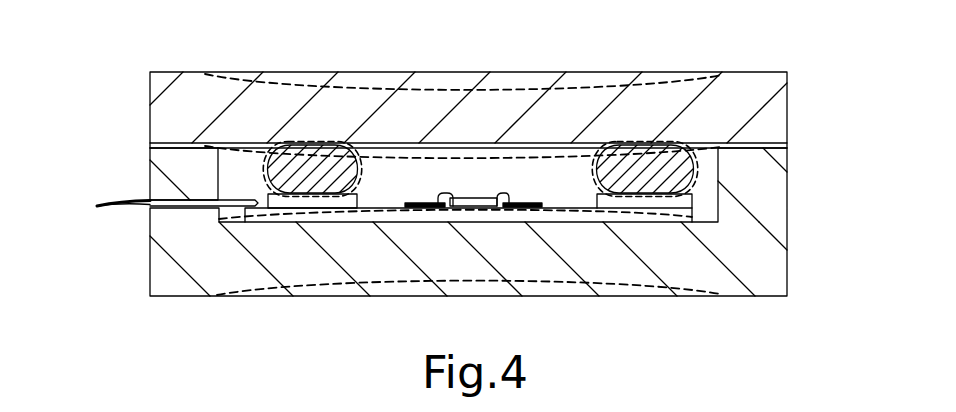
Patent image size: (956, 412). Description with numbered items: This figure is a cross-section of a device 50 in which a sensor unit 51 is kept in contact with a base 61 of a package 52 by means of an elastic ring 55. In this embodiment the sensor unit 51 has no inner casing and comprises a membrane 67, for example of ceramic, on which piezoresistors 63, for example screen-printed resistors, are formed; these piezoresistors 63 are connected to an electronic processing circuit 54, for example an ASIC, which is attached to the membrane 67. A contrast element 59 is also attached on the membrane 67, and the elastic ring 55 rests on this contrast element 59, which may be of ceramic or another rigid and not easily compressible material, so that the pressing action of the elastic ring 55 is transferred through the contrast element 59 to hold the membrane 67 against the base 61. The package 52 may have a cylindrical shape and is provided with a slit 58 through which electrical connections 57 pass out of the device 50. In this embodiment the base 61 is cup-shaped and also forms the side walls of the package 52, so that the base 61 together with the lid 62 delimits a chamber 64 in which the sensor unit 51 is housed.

The device 50 is at (803, 91).
The sensor unit 51 is at (516, 192).
The package 52 is at (141, 114).
The electronic processing circuit 54 is at (476, 198).
The elastic ring 55 is at (641, 166).
The electrical connections 57 is at (95, 197).
The slit 58 is at (152, 201).
The contrast element 59 is at (303, 202).
The base 61 is at (780, 259).
The lid 62 is at (740, 85).
The piezoresistors 63 is at (414, 208).
The chamber 64 is at (400, 188).
The membrane 67 is at (511, 218).